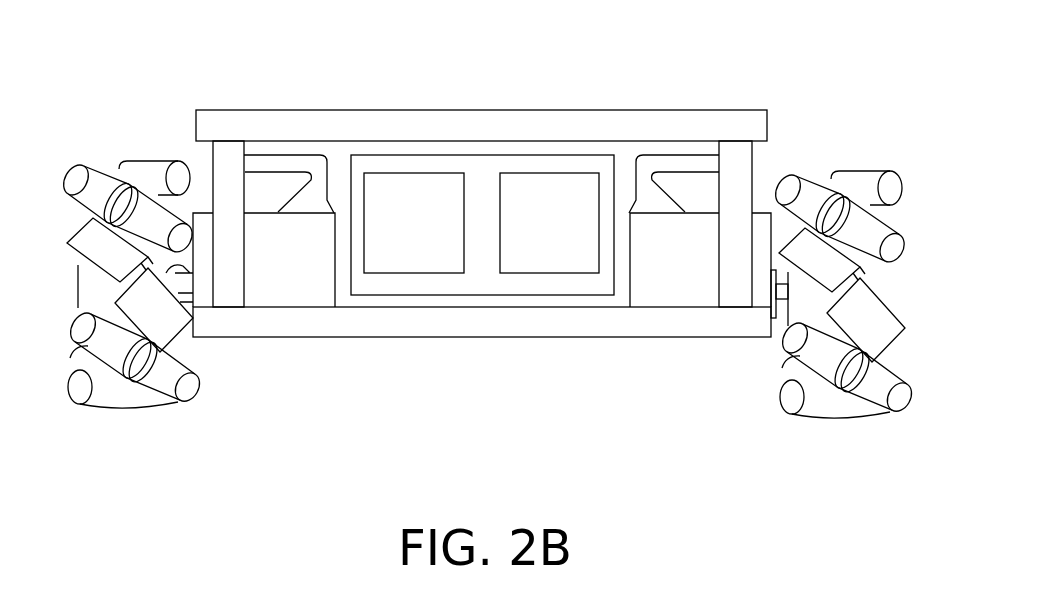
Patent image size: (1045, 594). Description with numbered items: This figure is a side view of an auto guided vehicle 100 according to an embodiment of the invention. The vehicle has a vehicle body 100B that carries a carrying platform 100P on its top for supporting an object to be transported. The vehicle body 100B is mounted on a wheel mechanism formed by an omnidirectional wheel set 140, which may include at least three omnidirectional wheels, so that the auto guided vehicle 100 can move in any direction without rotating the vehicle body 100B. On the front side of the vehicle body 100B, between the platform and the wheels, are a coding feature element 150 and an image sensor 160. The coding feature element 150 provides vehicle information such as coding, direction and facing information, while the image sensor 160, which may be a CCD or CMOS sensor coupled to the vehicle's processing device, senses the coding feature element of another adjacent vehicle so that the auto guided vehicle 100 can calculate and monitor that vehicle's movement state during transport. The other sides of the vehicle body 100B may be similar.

The auto guided vehicle 100 is at (792, 506).
The carrying platform 100P is at (499, 121).
The vehicle body 100B is at (277, 295).
The omnidirectional wheel set 140 is at (148, 165).
The coding feature element 150 is at (413, 273).
The image sensor 160 is at (550, 273).